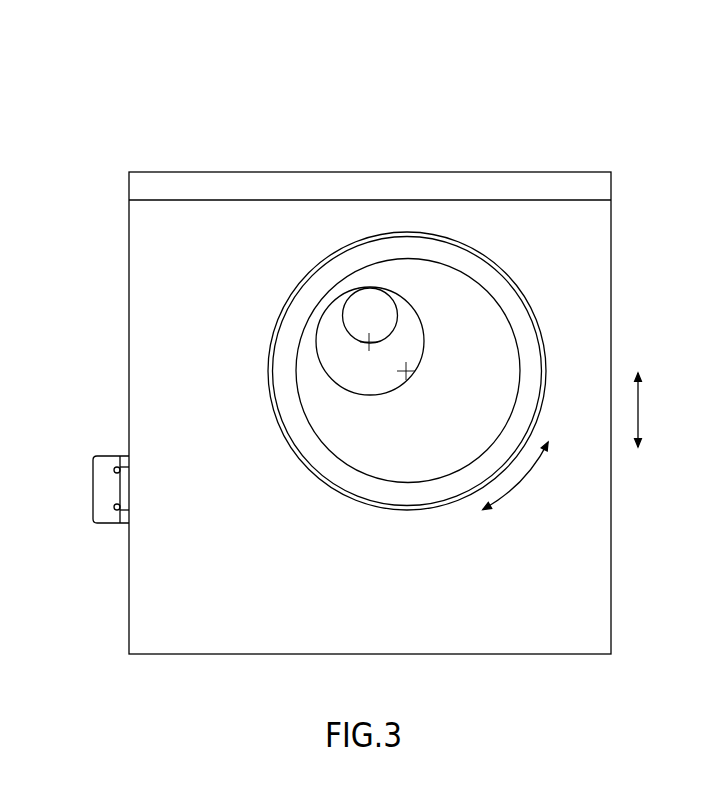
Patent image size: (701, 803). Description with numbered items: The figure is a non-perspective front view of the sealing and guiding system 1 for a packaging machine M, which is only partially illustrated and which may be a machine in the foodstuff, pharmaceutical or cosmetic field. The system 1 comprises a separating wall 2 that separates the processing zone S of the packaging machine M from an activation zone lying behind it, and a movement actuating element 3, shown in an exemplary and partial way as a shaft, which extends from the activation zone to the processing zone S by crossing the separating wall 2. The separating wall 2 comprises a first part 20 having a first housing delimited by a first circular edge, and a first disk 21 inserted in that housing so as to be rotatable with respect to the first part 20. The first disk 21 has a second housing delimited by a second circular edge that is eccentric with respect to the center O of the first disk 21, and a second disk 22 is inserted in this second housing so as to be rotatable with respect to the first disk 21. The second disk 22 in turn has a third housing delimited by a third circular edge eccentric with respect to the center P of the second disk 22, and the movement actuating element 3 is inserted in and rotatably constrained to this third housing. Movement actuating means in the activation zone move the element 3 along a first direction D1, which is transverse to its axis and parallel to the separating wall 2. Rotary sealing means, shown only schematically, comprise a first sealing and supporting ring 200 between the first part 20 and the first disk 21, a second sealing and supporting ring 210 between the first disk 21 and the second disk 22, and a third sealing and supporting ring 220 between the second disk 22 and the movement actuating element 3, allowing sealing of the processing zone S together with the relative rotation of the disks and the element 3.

The sealing and guiding system 1 is at (334, 424).
The separating wall 2 is at (334, 393).
The first part 20 is at (534, 617).
The first sealing and supporting ring 200 is at (527, 330).
The first disk 21 is at (455, 300).
The second disk 22 is at (308, 248).
The second sealing and supporting ring 210 is at (325, 305).
The third sealing and supporting ring 220 is at (397, 300).
The movement actuating element 3 is at (424, 218).
The packaging machine M is at (430, 102).
The center of the second disk P is at (368, 345).
The center of the first disk O is at (405, 372).
The first direction D1 is at (655, 410).
The processing zone S is at (81, 594).